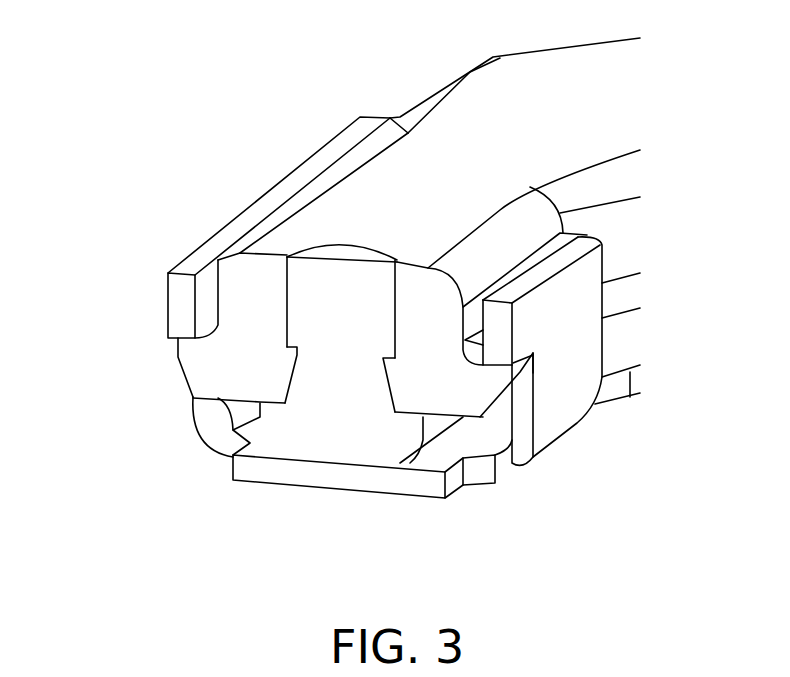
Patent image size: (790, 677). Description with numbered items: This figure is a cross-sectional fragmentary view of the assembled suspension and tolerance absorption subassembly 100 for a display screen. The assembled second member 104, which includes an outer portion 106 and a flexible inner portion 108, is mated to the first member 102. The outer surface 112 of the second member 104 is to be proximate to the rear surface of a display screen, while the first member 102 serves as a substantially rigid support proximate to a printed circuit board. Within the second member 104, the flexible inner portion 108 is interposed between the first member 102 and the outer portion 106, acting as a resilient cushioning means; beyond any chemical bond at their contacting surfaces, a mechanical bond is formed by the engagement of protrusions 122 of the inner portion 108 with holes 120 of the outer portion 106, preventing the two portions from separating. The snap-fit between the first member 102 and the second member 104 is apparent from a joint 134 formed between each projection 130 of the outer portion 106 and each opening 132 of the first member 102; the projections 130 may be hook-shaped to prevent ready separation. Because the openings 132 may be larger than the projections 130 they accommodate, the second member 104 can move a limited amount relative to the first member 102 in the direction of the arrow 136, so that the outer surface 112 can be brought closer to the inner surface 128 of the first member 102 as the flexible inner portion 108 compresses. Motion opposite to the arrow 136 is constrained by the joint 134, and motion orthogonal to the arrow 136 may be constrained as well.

The suspension and tolerance absorption subassembly 100 is at (174, 86).
The first member 102 is at (275, 477).
The second member 104 is at (615, 118).
The outer portion 106 is at (245, 288).
The flexible inner portion 108 is at (335, 427).
The outer surface 112 is at (535, 108).
The holes 120 is at (398, 258).
The protrusions 122 is at (345, 303).
The inner surface 128 is at (533, 272).
The projections 130 is at (187, 360).
The openings 132 is at (200, 420).
The joint 134 is at (170, 338).
The arrow 136 is at (669, 192).